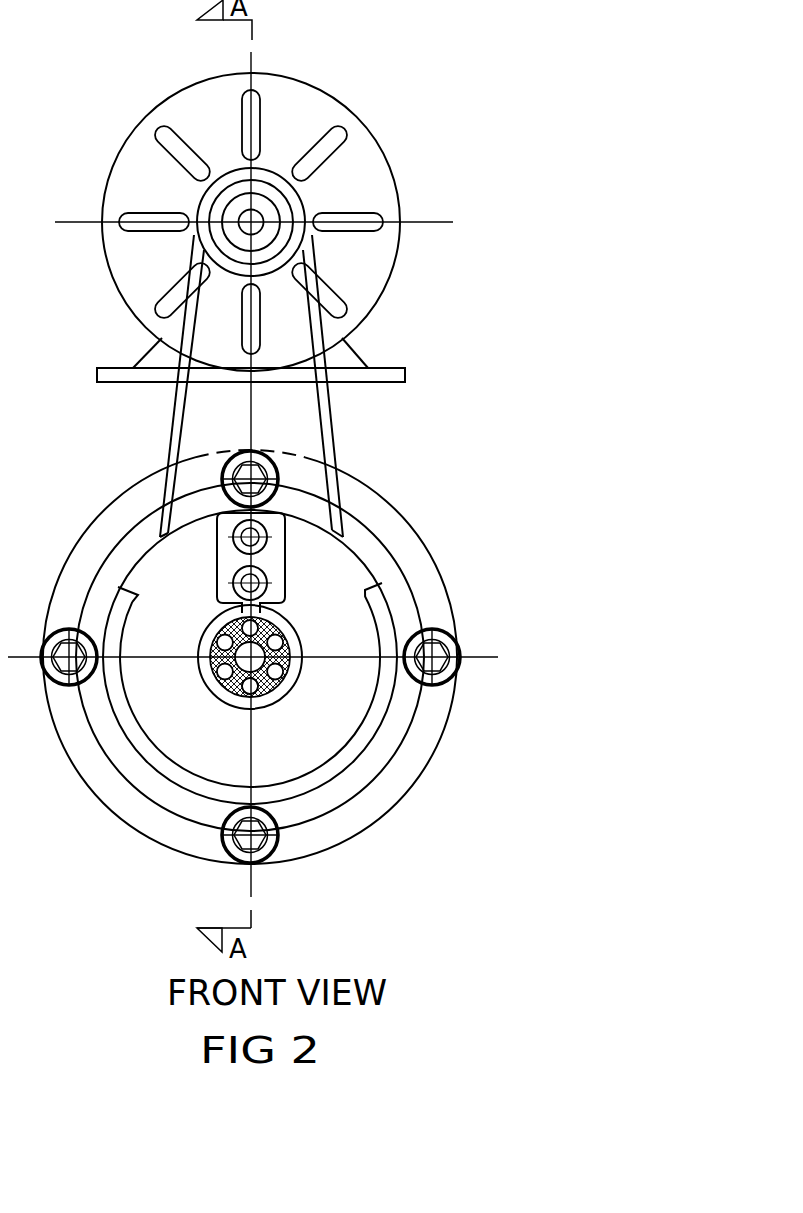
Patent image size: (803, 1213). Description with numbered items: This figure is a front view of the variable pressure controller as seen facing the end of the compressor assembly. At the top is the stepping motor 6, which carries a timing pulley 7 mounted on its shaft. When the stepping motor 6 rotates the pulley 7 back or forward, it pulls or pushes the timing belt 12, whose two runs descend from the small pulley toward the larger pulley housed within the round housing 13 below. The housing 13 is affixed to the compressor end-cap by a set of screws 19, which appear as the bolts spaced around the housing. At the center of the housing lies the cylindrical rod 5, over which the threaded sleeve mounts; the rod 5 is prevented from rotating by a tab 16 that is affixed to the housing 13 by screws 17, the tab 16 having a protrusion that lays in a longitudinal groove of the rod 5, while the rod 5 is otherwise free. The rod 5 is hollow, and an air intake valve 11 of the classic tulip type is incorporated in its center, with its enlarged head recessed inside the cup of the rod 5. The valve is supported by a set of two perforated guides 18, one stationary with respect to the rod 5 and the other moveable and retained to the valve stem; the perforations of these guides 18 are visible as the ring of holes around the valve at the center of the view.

The cylindrical rod 5 is at (276, 757).
The stepping motor 6 is at (287, 208).
The timing pulley 7 is at (296, 160).
The air intake valve 11 is at (171, 747).
The timing belt 12 is at (186, 386).
The housing 13 is at (282, 605).
The tab 16 is at (144, 529).
The screws 17 is at (137, 554).
The perforated guides 18 is at (349, 794).
The screws 19 is at (250, 706).